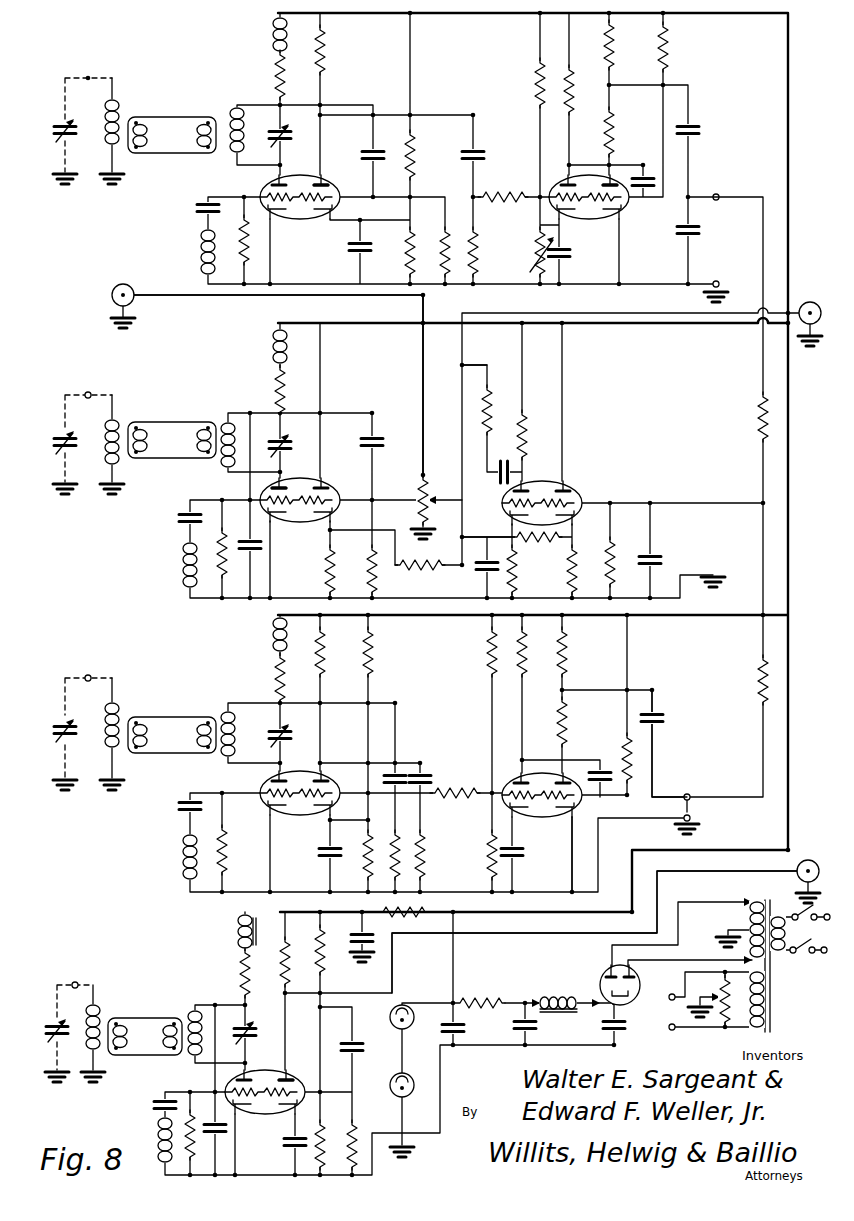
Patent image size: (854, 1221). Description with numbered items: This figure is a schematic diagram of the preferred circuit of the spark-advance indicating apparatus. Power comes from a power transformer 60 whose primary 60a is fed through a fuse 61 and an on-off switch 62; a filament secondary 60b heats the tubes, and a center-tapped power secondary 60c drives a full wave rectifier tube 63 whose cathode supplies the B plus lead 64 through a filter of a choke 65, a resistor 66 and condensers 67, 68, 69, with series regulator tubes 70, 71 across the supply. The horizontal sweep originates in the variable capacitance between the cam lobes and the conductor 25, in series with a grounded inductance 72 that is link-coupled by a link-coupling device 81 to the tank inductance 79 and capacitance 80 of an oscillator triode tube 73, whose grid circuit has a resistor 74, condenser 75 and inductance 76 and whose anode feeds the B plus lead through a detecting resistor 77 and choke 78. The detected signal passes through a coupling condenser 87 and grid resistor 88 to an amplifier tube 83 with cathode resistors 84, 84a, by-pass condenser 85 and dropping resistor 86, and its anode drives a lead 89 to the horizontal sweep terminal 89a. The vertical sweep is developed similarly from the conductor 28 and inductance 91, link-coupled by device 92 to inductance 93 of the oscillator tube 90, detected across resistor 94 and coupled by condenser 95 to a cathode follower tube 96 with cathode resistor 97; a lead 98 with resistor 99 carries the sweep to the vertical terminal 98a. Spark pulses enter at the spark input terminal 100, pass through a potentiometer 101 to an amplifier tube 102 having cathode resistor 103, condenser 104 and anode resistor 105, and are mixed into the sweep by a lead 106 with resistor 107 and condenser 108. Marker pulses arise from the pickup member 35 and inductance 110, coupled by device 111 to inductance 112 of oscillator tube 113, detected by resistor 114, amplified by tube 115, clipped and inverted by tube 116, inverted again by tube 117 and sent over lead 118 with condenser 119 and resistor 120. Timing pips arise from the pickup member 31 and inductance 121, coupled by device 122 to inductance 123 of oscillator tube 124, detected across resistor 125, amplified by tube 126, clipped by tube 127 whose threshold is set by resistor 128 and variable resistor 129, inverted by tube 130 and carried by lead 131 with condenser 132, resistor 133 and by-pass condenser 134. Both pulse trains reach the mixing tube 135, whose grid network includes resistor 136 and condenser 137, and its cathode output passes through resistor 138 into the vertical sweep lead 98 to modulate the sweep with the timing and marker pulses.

The pickup member 31 is at (64, 122).
The inductance 121 is at (117, 108).
The link-coupling device 122 is at (172, 117).
The inductance 123 is at (234, 116).
The oscillator tube 124 is at (262, 190).
The detecting resistor 125 is at (277, 62).
The amplifier tube 126 is at (334, 183).
The clipper-inverter tube 127 is at (562, 186).
The resistor 128 is at (538, 82).
The variable resistor 129 is at (539, 246).
The inverter tube 130 is at (623, 212).
The lead 131 is at (690, 106).
The condenser 132 is at (691, 136).
The resistor 133 is at (760, 414).
The by-pass condenser 134 is at (691, 236).
The B plus lead 64 is at (760, 18).
The vertical sweep lead 98 is at (546, 313).
The terminal 98a is at (806, 301).
The spark input terminal 100 is at (110, 300).
The conductor 28 is at (64, 436).
The inductance 91 is at (117, 426).
The link-coupling device 92 is at (172, 422).
The inductance 93 is at (226, 452).
The resistor 94 is at (277, 378).
The condenser 95 is at (375, 438).
The cathode follower tube 96 is at (322, 488).
The oscillator tube 90 is at (278, 523).
The resistor 97 is at (328, 560).
The resistor 99 is at (402, 570).
The potentiometer 101 is at (420, 496).
The lead 106 is at (472, 365).
The resistor 107 is at (490, 402).
The resistor 105 is at (526, 426).
The condenser 108 is at (500, 480).
The mixing tube 135 is at (582, 496).
The amplifier tube 102 is at (512, 516).
The resistor 138 is at (528, 545).
The resistor 103 is at (542, 571).
The condenser 104 is at (488, 573).
The resistor 136 is at (616, 556).
The condenser 137 is at (660, 562).
The pickup member 35 is at (64, 722).
The inductance 110 is at (117, 712).
The link-coupling device 111 is at (176, 717).
The inductance 112 is at (226, 760).
The resistor 114 is at (277, 668).
The oscillator tube 113 is at (268, 810).
The amplifier tube 115 is at (322, 822).
The amplifier tube 116 is at (508, 786).
The inverter tube 117 is at (573, 816).
The lead 118 is at (655, 770).
The condenser 119 is at (657, 714).
The resistor 120 is at (758, 702).
The terminal 89a is at (805, 860).
The lead 89 is at (516, 935).
The conductor 25 is at (60, 1036).
The inductance 72 is at (97, 1010).
The link-coupling device 81 is at (142, 1018).
The inductance 79 is at (194, 1012).
The choke 78 is at (242, 932).
The detecting or load resistor 77 is at (243, 976).
The capacitance 80 is at (241, 1033).
The triode tube 73 is at (262, 1072).
The amplifier tube 83 is at (292, 1072).
The condenser 75 is at (163, 1100).
The inductance 76 is at (163, 1132).
The resistor 74 is at (193, 1134).
The condenser 85 is at (291, 1146).
The dropping resistor 86 is at (287, 960).
The resistor 84 is at (324, 960).
The resistor 84a is at (323, 1130).
The coupling condenser 87 is at (355, 1049).
The grid resistor 88 is at (356, 1120).
The regulator tube 70 is at (390, 1018).
The regulator tube 71 is at (407, 1094).
The condenser 69 is at (450, 1026).
The resistor 66 is at (500, 990).
The choke 65 is at (563, 1000).
The condenser 68 is at (521, 1030).
The condenser 67 is at (609, 1030).
The full wave rectifier tube 63 is at (609, 975).
The power transformer 60 is at (765, 903).
The power secondary 60c is at (754, 928).
The filament secondary 60b is at (771, 1030).
The primary 60a is at (782, 956).
The fuse 61 is at (799, 912).
The on-off switch 62 is at (806, 958).